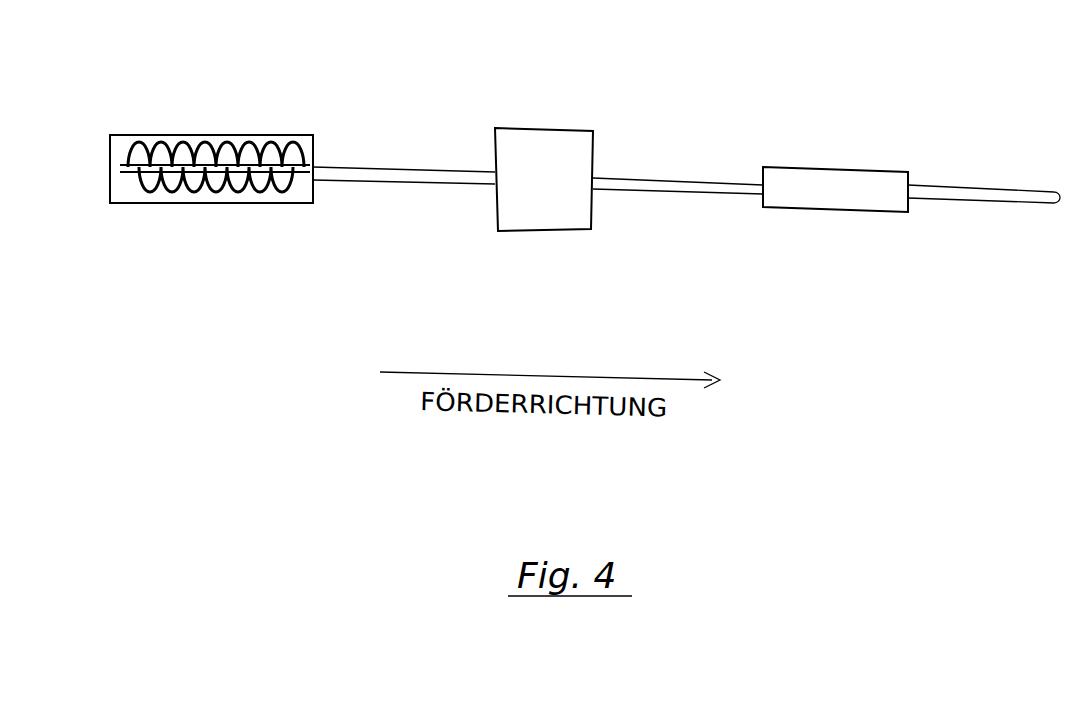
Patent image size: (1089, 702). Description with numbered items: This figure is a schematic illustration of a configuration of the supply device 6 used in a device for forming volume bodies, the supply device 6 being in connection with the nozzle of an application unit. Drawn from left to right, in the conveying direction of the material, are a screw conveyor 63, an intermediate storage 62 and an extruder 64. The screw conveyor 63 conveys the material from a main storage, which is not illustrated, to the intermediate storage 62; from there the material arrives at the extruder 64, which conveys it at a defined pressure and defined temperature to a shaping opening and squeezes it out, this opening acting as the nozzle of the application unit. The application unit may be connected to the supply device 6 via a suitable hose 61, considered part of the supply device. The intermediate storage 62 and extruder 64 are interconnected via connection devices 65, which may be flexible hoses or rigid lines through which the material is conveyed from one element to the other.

The supply device 6 is at (957, 44).
The hose 61 is at (963, 190).
The intermediate storage 62 is at (543, 218).
The screw conveyor 63 is at (218, 194).
The extruder 64 is at (832, 197).
The connection devices 65 is at (400, 168).